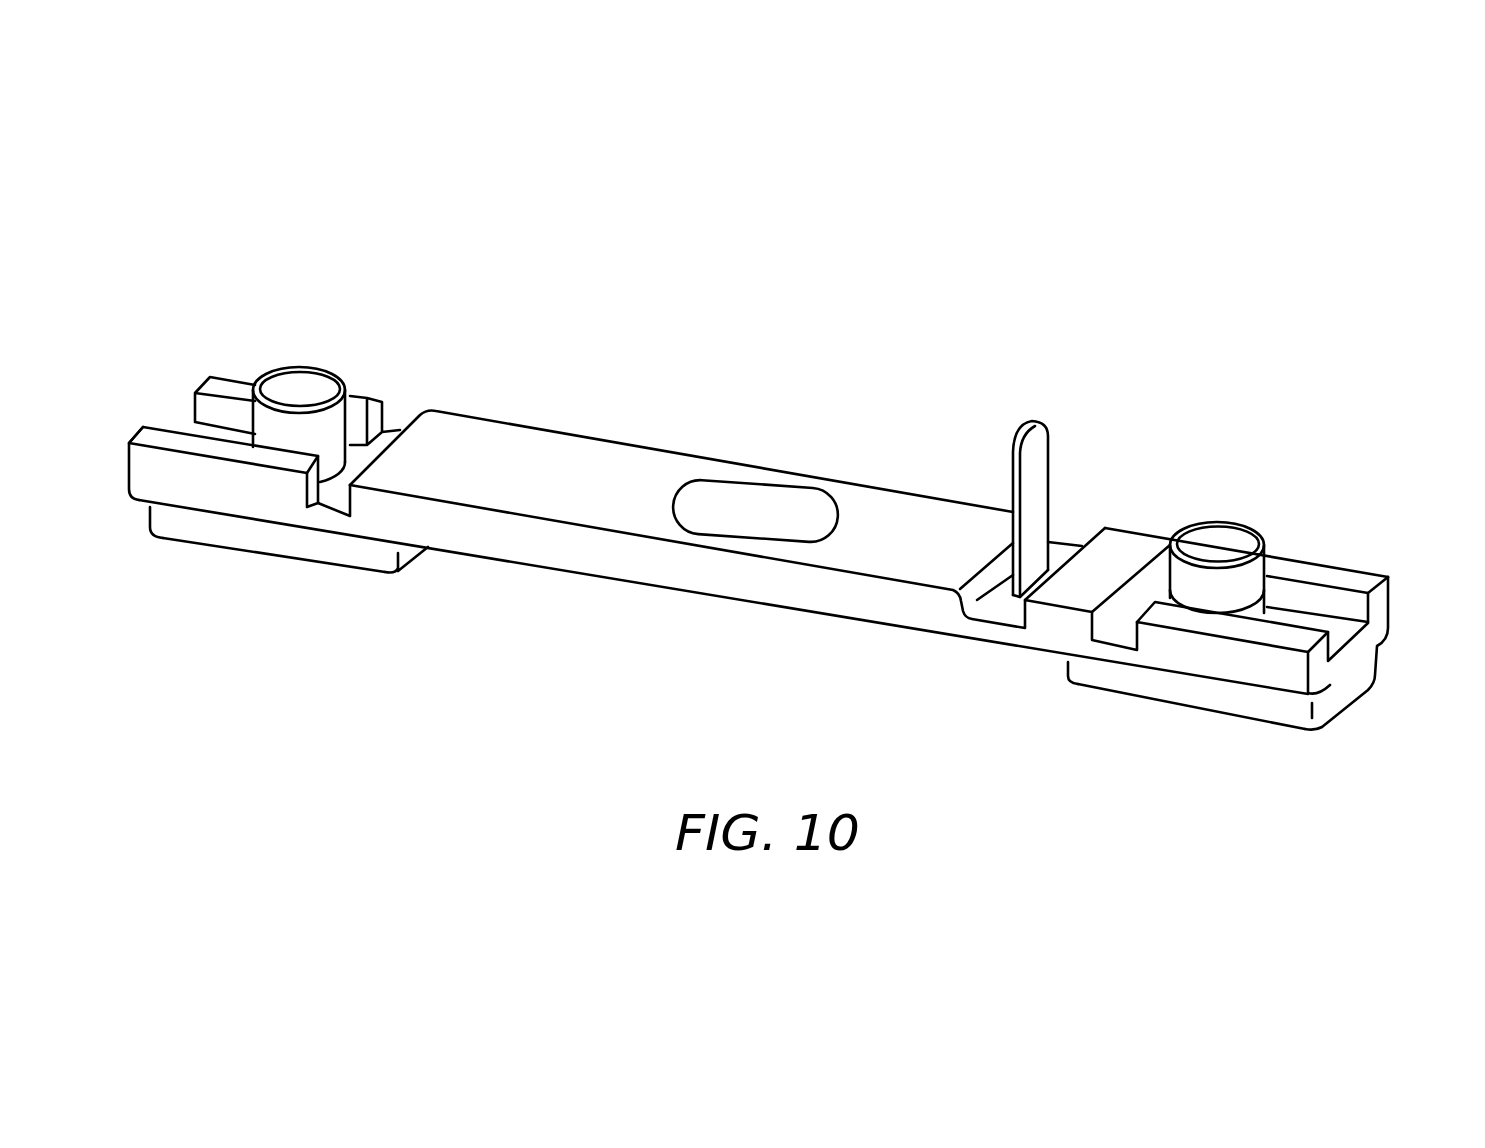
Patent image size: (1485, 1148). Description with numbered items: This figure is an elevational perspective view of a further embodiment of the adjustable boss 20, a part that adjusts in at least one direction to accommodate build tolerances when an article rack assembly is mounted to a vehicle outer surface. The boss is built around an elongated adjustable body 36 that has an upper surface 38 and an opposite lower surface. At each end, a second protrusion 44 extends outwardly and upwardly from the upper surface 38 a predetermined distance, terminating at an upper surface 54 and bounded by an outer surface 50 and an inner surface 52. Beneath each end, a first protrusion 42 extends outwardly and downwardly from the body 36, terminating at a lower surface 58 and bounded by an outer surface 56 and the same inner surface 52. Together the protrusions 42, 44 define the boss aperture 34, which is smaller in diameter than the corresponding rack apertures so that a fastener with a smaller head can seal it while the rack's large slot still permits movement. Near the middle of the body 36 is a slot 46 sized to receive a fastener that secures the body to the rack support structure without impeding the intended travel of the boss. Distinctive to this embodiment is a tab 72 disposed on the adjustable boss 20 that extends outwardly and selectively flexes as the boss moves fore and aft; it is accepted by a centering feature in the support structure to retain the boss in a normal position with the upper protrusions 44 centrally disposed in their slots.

The adjustable boss 20 is at (1163, 222).
The boss aperture 34 is at (800, 415).
The adjustable body 36 is at (890, 506).
The upper surface 38 is at (566, 493).
The first protrusion 42 is at (726, 651).
The second protrusion 44 is at (368, 420).
The slot 46 is at (740, 521).
The outer surface 50 is at (258, 417).
The inner surface 52 is at (305, 380).
The upper surface 54 is at (332, 426).
The outer surface 56 is at (297, 542).
The lower surface 58 is at (868, 631).
The tab 72 is at (1030, 425).